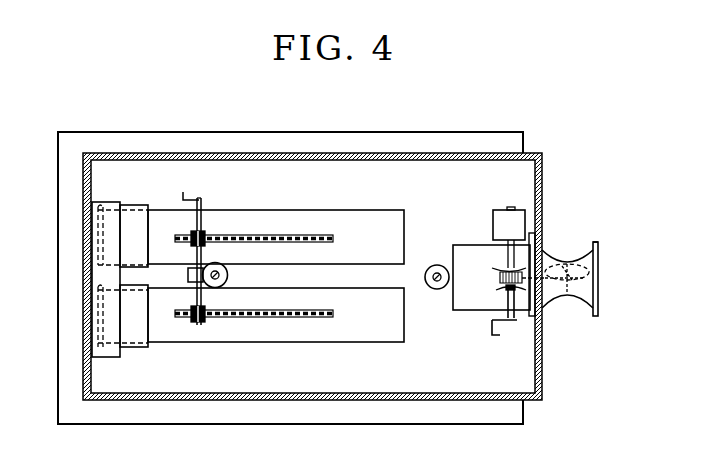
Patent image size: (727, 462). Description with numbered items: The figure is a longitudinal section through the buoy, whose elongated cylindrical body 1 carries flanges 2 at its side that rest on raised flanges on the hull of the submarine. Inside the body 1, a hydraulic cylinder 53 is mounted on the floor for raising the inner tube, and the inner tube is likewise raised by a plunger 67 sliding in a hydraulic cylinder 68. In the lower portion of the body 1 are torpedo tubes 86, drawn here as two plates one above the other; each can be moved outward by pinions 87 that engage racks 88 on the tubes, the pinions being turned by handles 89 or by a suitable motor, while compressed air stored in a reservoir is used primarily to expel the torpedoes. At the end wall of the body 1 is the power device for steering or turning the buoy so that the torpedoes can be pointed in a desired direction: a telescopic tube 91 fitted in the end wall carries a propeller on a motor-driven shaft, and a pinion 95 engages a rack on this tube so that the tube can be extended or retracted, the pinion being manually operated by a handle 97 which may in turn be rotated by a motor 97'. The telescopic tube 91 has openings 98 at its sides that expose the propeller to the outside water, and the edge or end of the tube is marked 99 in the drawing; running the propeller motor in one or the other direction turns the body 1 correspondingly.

The elongated cylindrical body 1 is at (529, 170).
The flanges 2 is at (494, 133).
The hydraulic cylinder 53 is at (434, 289).
The plunger 67 is at (222, 270).
The hydraulic cylinder 68 is at (222, 285).
The torpedo tubes 86 is at (227, 211).
The pinions 87 is at (207, 241).
The racks 88 is at (284, 239).
The handles 89 is at (199, 252).
The telescopic tube 91 is at (598, 285).
The pinion 95 is at (506, 284).
The handle 97 is at (509, 325).
The motor 97' is at (493, 223).
The openings 98 is at (558, 255).
The flange edge 99 is at (598, 247).